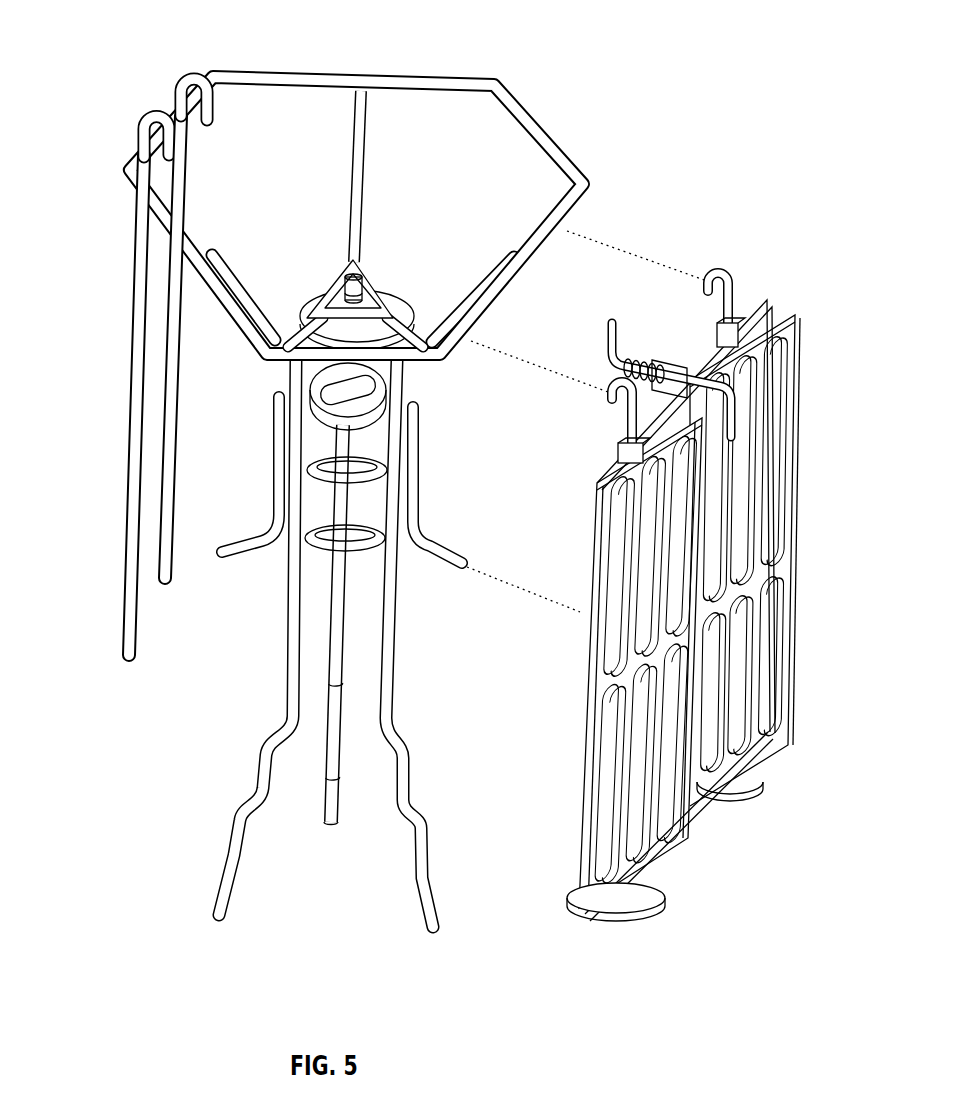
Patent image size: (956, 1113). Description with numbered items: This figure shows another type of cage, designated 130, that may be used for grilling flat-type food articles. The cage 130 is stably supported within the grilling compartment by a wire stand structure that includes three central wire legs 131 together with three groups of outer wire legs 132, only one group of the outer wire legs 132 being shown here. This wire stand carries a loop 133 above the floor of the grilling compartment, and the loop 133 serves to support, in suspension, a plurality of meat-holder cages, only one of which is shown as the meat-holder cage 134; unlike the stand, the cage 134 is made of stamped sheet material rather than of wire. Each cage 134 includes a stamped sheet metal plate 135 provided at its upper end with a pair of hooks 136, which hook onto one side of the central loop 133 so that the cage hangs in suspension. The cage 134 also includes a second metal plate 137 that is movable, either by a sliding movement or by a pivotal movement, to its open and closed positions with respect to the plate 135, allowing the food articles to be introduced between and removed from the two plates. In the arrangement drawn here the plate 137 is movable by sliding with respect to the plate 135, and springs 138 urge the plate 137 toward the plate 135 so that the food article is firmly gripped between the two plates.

The cage 130 is at (135, 81).
The central wire legs 131 is at (287, 688).
The outer wire legs 132 is at (123, 508).
The loop 133 is at (401, 82).
The meat-holder cage 134 is at (803, 366).
The stamped sheet metal plate 135 is at (600, 547).
The hooks 136 is at (742, 265).
The second metal plate 137 is at (787, 528).
The springs 138 is at (665, 357).